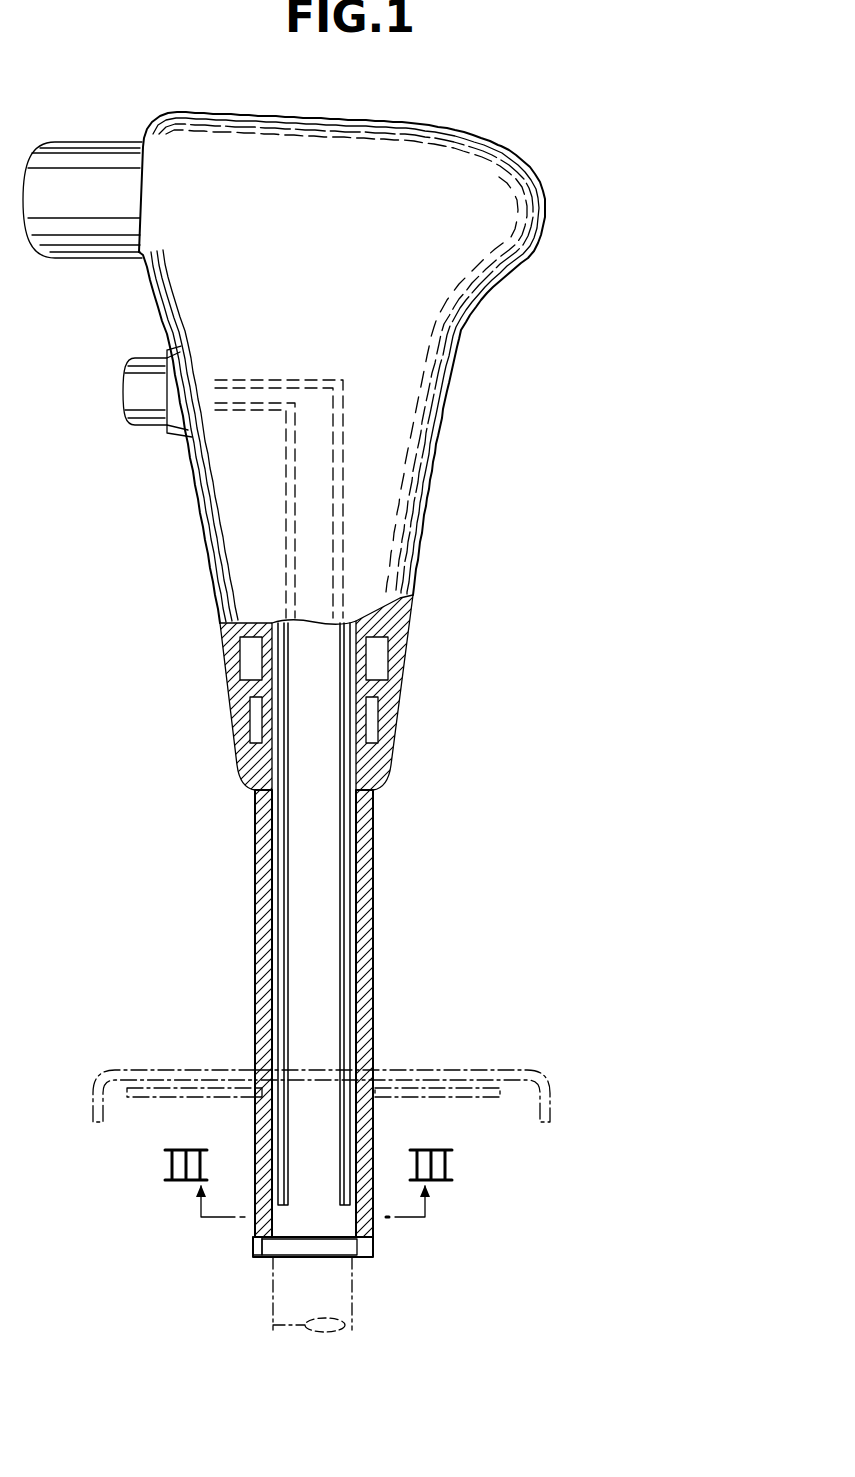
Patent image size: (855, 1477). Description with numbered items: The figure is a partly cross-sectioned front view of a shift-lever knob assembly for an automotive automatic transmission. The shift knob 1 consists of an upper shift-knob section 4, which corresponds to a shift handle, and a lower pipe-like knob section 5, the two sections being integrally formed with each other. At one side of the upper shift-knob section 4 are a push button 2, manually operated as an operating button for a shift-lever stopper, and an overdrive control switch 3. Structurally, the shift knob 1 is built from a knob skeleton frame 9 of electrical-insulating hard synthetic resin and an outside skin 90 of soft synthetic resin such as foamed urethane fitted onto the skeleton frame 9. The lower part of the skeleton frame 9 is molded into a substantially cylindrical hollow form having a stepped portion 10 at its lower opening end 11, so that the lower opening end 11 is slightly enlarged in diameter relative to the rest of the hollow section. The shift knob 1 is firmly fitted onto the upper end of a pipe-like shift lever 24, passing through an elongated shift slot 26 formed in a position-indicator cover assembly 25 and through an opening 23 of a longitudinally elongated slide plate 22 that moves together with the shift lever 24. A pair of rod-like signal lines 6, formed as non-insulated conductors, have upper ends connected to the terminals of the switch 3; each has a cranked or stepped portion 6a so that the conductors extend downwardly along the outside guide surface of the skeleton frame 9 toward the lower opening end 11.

The shift knob 1 is at (552, 158).
The push button 2 is at (82, 235).
The overdrive control switch 3 is at (123, 387).
The upper shift-knob section 4 is at (412, 365).
The pipe-like knob section 5 is at (375, 1030).
The rod-like signal lines 6 is at (283, 913).
The cranked or stepped portion 6a is at (265, 670).
The knob skeleton frame 9 is at (262, 1158).
The stepped portion 10 is at (256, 1243).
The lower opening end 11 is at (374, 1250).
The slide plate 22 is at (478, 1088).
The opening 23 is at (253, 1095).
The pipe-like shift lever 24 is at (292, 1296).
The position-indicator cover assembly 25 is at (552, 1108).
The elongated shift slot 26 is at (230, 1066).
The outside skin 90 is at (237, 727).